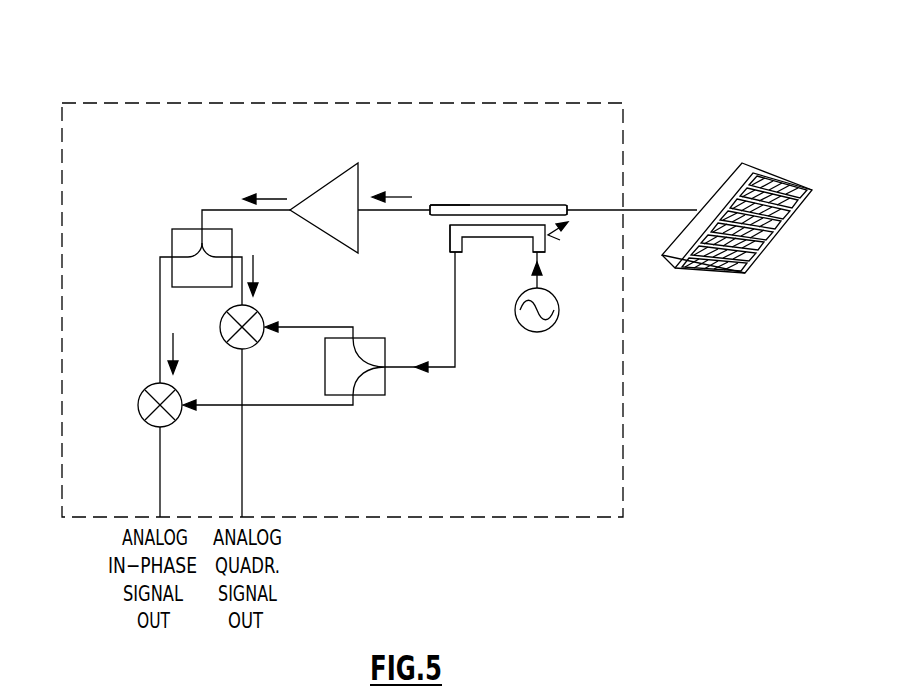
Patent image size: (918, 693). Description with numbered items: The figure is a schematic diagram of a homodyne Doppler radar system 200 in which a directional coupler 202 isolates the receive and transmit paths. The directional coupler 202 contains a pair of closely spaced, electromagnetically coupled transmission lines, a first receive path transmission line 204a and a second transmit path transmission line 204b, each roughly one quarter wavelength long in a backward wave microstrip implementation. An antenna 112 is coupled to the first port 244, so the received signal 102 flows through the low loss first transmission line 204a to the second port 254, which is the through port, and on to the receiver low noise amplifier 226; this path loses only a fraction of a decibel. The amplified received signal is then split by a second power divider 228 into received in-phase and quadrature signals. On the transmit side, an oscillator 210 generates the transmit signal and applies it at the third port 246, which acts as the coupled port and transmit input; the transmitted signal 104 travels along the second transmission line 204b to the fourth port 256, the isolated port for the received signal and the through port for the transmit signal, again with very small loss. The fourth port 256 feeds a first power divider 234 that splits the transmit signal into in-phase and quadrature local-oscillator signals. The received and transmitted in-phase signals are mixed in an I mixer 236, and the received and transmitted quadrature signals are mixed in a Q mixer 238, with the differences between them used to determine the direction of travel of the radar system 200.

The homodyne Doppler radar system 200 is at (656, 56).
The directional coupler 202 is at (554, 157).
The first (receive path) transmission line 204a is at (443, 205).
The second (transmit path) transmission line 204b is at (451, 236).
The second port 254 is at (430, 212).
The first port 244 is at (565, 205).
The third port 246 is at (533, 253).
The fourth port 256 is at (461, 254).
The transmitted signal 104 is at (547, 239).
The received signal 102 is at (585, 197).
The antenna 112 is at (767, 173).
The oscillator 210 is at (558, 306).
The receiver low noise amplifier 226 is at (340, 166).
The second power divider 228 is at (190, 229).
The first power divider 234 is at (385, 388).
The I mixer 236 is at (170, 430).
The Q mixer 238 is at (252, 347).